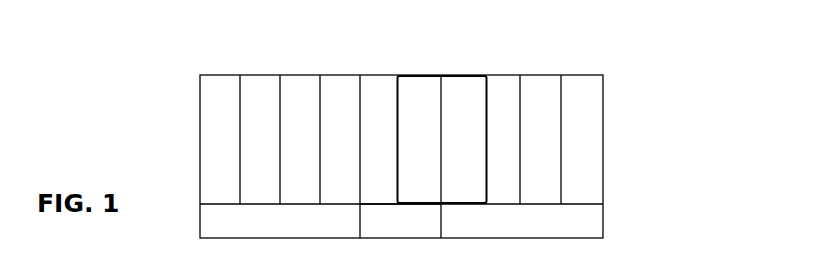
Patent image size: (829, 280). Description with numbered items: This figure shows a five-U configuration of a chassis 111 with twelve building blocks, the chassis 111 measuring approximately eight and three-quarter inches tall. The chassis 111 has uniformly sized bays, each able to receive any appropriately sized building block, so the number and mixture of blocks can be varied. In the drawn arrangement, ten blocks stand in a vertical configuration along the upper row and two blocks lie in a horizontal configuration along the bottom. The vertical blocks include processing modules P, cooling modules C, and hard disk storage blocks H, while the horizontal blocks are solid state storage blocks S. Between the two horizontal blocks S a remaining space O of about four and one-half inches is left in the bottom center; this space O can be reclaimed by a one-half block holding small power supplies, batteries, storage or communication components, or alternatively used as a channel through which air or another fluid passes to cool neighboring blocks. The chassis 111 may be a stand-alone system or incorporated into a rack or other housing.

The chassis 111 is at (614, 77).
The processing module P is at (366, 139).
The cooling module C is at (442, 139).
The hard disk storage block H is at (562, 139).
The solid state storage block S is at (401, 221).
The space O is at (400, 220).